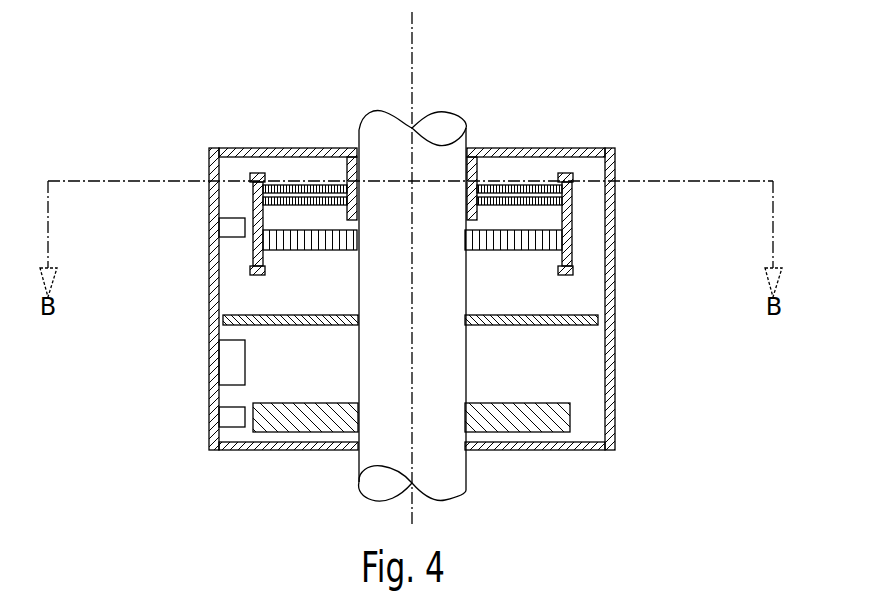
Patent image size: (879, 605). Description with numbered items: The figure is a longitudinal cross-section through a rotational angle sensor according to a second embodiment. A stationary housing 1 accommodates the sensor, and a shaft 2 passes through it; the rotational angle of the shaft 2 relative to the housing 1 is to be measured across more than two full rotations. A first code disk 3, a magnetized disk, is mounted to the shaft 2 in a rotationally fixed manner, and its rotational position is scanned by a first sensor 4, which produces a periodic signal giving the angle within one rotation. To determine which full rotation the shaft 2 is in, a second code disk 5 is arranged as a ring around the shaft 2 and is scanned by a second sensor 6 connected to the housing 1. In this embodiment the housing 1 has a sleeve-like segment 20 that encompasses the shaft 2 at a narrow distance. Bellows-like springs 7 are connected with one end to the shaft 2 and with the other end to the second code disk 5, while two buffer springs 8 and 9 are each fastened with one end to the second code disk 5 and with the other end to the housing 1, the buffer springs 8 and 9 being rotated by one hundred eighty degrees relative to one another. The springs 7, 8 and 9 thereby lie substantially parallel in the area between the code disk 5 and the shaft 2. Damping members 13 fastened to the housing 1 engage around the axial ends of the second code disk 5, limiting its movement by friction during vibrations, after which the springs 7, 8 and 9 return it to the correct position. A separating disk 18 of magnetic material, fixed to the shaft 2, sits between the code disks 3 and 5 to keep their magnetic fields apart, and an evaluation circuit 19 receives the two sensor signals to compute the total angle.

The housing 1 is at (615, 390).
The shaft 2 is at (437, 128).
The first code disk 3 is at (566, 425).
The first sensor 4 is at (234, 418).
The second code disk 5 is at (572, 210).
The second sensor 6 is at (234, 230).
The bellows-like springs 7 is at (297, 238).
The buffer spring 8 is at (500, 185).
The buffer spring 9 is at (537, 203).
The damping members 13 is at (254, 174).
The separating disk 18 is at (598, 321).
The evaluation circuit 19 is at (234, 366).
The sleeve-like segment 20 is at (347, 173).